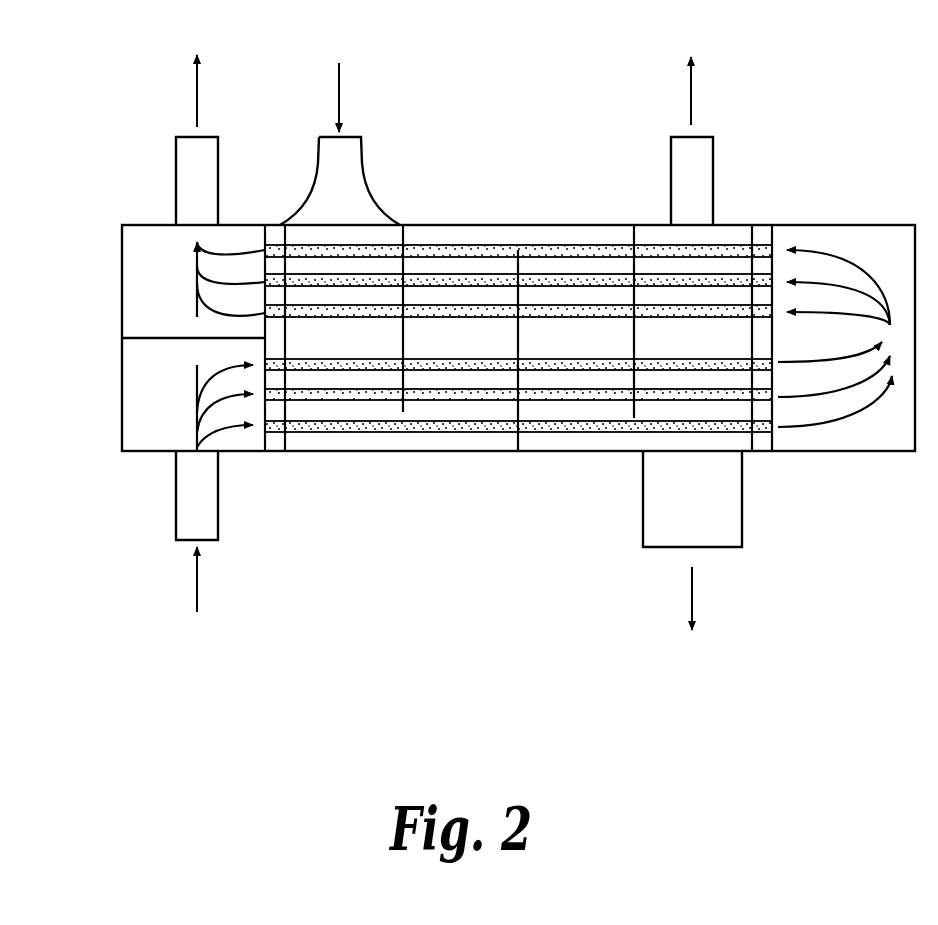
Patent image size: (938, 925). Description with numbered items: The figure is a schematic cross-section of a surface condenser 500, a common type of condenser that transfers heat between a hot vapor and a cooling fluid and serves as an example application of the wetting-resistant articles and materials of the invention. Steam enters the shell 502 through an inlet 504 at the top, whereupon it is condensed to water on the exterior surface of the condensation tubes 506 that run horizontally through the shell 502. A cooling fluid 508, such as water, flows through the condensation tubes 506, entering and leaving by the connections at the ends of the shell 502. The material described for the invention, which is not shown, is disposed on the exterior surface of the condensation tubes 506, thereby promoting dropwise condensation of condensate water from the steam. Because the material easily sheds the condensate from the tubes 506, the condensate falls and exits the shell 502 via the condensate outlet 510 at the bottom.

The surface condenser 500 is at (122, 657).
The shell 502 is at (363, 440).
The inlet 504 is at (330, 162).
The condensation tubes 506 is at (528, 315).
The cooling fluid 508 is at (444, 336).
The condensate outlet 510 is at (692, 561).